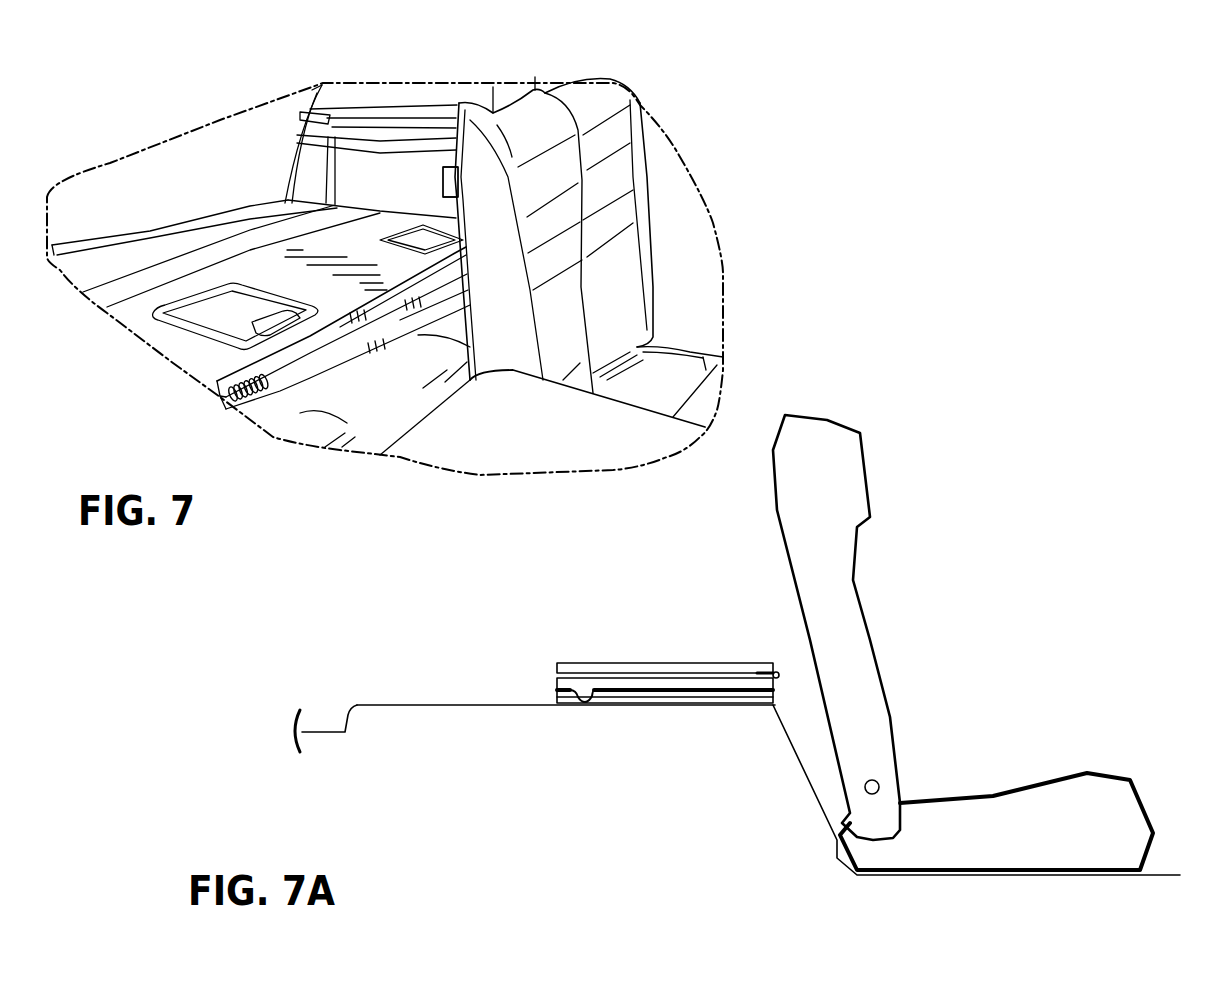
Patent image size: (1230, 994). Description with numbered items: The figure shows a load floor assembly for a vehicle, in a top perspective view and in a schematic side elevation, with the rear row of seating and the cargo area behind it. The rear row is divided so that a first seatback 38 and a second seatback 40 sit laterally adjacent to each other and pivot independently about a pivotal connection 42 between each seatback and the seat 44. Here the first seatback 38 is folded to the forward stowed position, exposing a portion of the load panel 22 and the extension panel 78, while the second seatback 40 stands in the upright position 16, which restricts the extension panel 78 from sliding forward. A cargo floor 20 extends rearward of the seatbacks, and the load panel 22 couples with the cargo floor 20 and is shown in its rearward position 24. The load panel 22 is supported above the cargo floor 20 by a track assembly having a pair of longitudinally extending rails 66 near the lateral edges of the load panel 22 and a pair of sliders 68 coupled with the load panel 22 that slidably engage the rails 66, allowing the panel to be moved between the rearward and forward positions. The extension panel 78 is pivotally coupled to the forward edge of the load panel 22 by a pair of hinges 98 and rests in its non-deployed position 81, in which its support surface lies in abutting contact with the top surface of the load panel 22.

In FIG. 7, the upright position 16 is at (602, 235).
In FIG. 7A, the upright position 16 is at (962, 643).
In FIG. 7, the cargo floor 20 is at (340, 370).
In FIG. 7A, the cargo floor 20 is at (470, 703).
In FIG. 7, the load panel 22 is at (300, 368).
In FIG. 7A, the load panel 22 is at (650, 687).
In FIG. 7, the rearward position 24 is at (430, 195).
In FIG. 7, the first seatback 38 is at (533, 453).
In FIG. 7, the second seatback 40 is at (610, 190).
In FIG. 7A, the second seatback 40 is at (845, 505).
In FIG. 7A, the pivotal connection 42 is at (863, 790).
In FIG. 7A, the seat 44 is at (1063, 805).
In FIG. 7A, the rails 66 is at (657, 703).
In FIG. 7A, the sliders 68 is at (584, 697).
In FIG. 7A, the extension panel 78 is at (617, 663).
In FIG. 7, the non-deployed position 81 is at (430, 195).
In FIG. 7A, the non-deployed position 81 is at (677, 660).
In FIG. 7, the hinges 98 is at (247, 417).